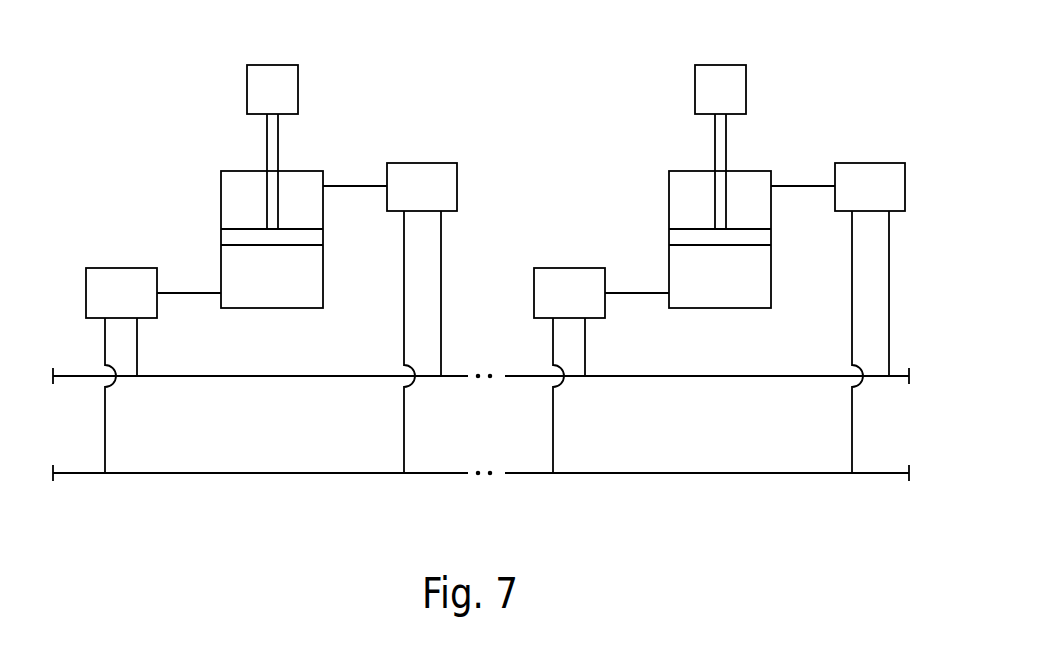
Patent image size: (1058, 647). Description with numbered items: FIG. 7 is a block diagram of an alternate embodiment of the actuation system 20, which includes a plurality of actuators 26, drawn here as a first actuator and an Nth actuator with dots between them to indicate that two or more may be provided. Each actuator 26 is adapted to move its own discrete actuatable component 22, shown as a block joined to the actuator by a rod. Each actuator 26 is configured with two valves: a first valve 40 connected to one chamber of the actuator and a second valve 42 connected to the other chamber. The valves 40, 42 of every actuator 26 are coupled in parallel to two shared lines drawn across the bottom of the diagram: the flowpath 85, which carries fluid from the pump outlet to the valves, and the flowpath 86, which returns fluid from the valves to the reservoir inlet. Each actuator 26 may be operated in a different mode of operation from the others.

The actuation system 20 is at (871, 65).
The actuatable component 22 is at (727, 100).
The actuator 26 is at (657, 201).
The first valve 40 is at (129, 301).
The second valve 42 is at (430, 195).
The flowpath 85 is at (212, 376).
The flowpath 86 is at (212, 473).